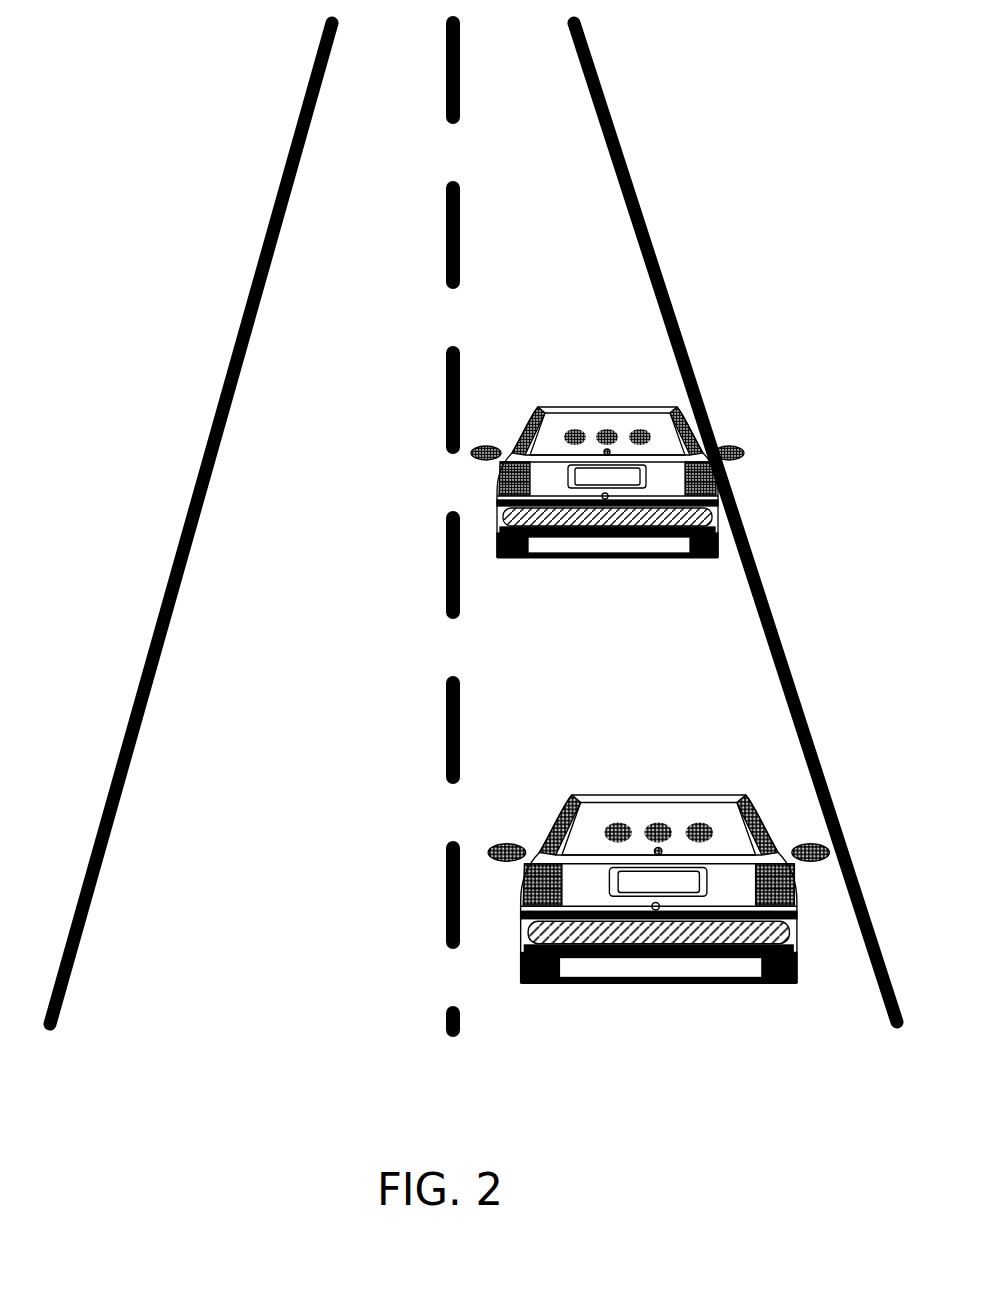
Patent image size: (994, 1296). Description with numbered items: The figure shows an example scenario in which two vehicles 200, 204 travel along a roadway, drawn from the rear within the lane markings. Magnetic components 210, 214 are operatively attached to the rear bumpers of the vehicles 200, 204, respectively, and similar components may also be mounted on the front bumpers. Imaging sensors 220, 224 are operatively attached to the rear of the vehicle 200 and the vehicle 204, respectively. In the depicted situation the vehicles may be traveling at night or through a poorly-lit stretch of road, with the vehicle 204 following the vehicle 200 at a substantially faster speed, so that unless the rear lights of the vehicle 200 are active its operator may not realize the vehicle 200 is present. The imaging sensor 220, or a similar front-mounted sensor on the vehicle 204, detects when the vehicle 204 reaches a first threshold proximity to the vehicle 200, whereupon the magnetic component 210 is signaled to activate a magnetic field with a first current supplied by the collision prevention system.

The vehicle 200 is at (570, 427).
The magnetic component 210 is at (577, 525).
The imaging sensor 220 is at (606, 499).
The vehicle 204 is at (653, 810).
The magnetic component 214 is at (605, 933).
The imaging sensor 224 is at (657, 910).